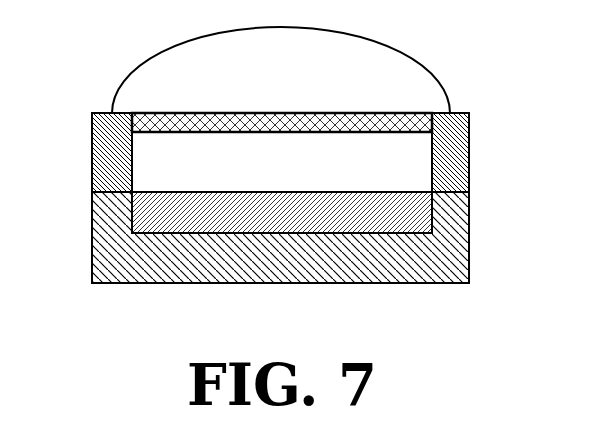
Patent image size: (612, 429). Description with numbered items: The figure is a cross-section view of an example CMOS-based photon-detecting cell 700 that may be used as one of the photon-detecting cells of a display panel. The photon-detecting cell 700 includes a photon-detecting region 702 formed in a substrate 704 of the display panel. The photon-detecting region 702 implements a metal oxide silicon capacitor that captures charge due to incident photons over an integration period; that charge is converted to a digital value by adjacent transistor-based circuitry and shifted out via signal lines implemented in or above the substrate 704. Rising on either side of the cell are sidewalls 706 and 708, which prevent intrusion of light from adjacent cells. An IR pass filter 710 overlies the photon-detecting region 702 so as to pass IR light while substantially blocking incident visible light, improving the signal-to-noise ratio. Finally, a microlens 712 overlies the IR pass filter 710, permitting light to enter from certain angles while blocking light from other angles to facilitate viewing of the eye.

The photon-detecting cell 700 is at (513, 157).
The photon-detecting region 702 is at (295, 222).
The substrate 704 is at (92, 258).
The sidewall 706 is at (92, 150).
The sidewall 708 is at (432, 152).
The IR pass filter 710 is at (234, 113).
The microlens 712 is at (131, 74).